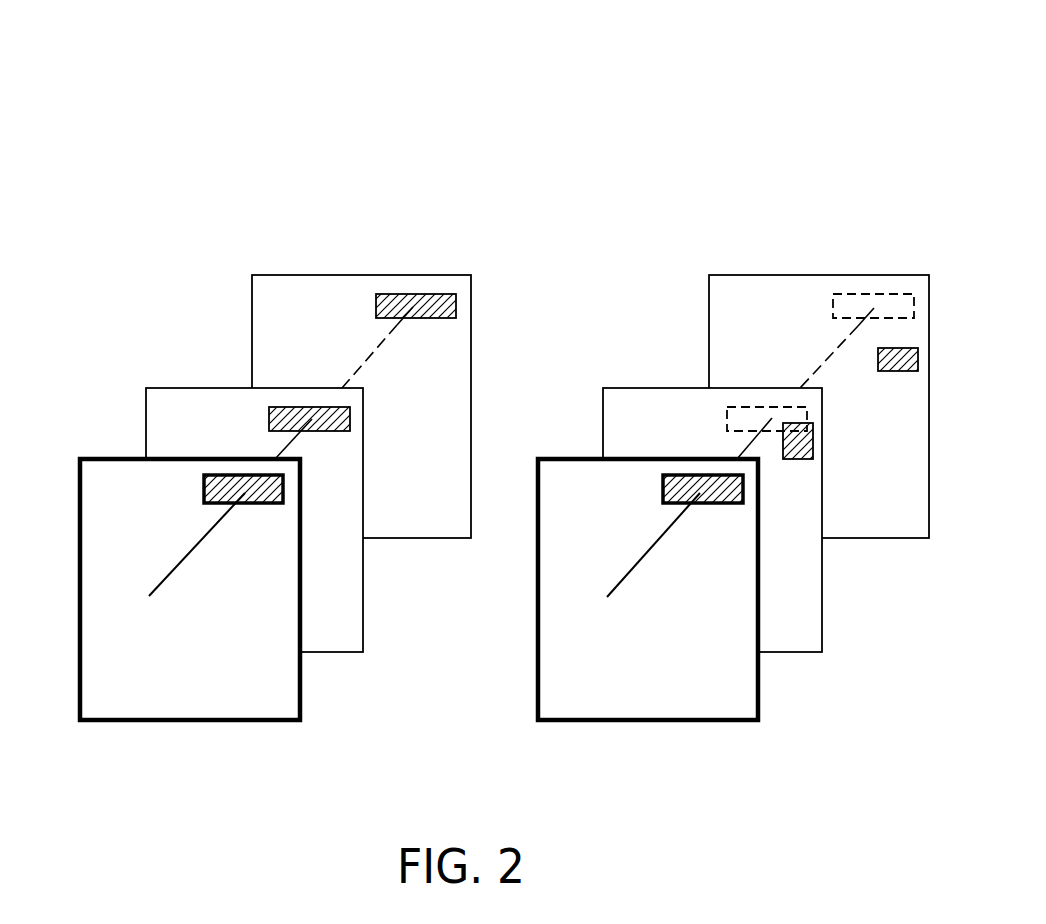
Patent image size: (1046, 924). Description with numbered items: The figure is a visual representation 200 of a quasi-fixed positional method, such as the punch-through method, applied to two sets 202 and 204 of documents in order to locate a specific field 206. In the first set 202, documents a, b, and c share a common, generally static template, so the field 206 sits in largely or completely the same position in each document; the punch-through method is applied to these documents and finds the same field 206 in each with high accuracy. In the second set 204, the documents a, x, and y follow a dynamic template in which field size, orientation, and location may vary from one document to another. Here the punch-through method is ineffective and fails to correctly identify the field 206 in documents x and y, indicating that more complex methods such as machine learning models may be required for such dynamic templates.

The visual representation 200 is at (800, 110).
The set of documents 202 is at (502, 227).
The set of documents 204 is at (959, 227).
The field 206 is at (262, 503).